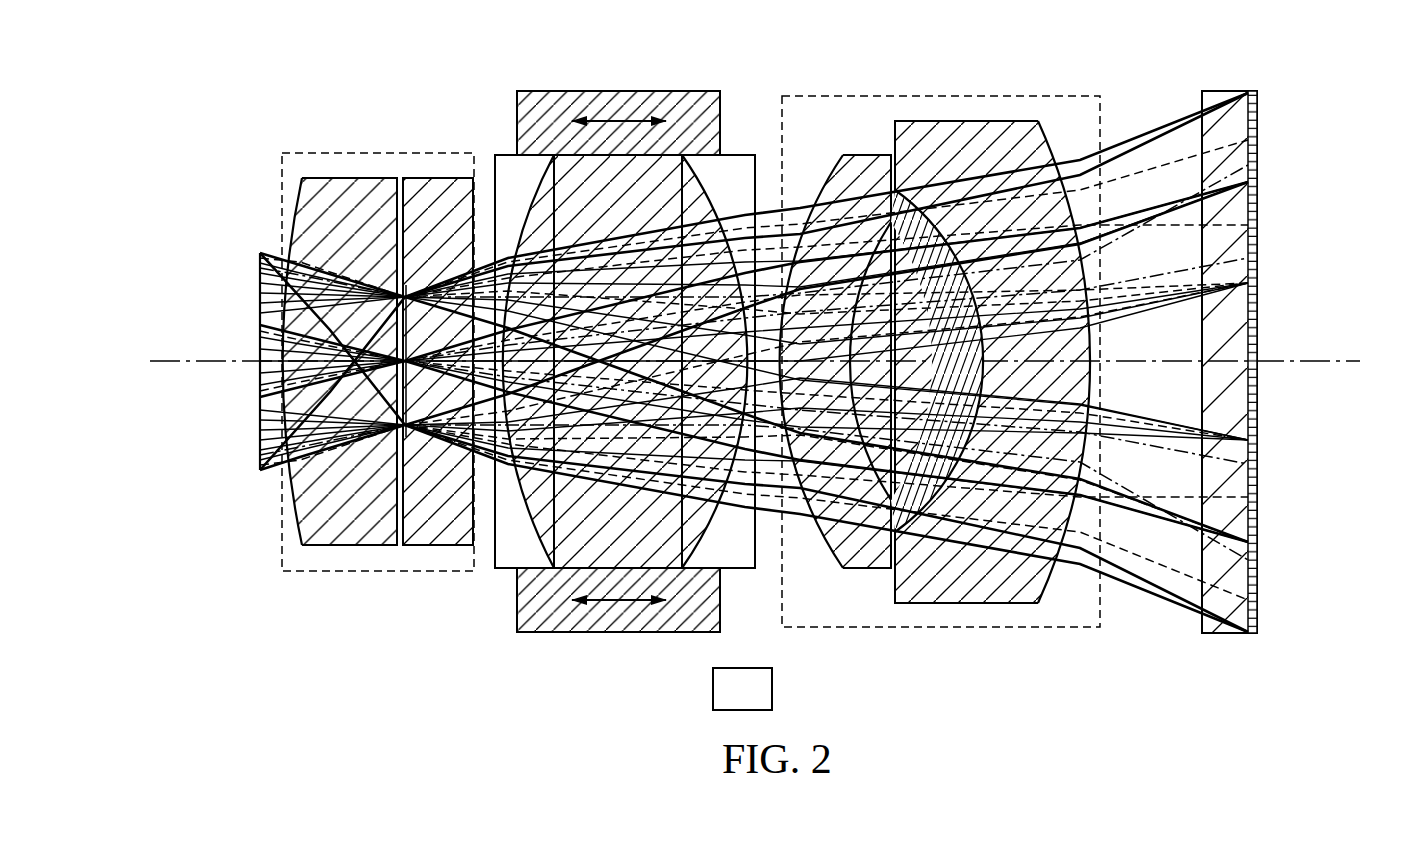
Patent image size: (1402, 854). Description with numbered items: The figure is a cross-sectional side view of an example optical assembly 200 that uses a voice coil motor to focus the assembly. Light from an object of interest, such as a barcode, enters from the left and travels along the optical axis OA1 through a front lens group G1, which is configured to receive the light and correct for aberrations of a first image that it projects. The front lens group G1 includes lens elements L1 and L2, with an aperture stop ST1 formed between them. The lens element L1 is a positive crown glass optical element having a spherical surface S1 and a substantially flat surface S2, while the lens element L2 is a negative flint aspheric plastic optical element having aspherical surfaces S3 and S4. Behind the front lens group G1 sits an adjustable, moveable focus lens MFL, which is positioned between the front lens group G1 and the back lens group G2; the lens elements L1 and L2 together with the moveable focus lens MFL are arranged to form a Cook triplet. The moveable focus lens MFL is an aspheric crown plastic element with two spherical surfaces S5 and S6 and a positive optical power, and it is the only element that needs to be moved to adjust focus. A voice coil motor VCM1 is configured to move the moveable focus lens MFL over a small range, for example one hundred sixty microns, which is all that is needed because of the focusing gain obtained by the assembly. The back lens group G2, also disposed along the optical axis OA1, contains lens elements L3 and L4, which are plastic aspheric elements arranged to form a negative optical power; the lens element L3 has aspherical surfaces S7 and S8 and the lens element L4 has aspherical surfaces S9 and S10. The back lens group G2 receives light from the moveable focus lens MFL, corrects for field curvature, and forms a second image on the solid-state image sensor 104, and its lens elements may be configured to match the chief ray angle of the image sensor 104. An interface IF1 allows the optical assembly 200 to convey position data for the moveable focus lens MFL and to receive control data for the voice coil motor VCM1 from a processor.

The optical assembly 200 is at (184, 60).
The image sensor 104 is at (1250, 91).
The optical axis OA1 is at (218, 360).
The front lens group G1 is at (375, 153).
The back lens group G2 is at (938, 96).
The lens element L1 is at (334, 403).
The lens element L2 is at (356, 364).
The lens element L3 is at (840, 362).
The lens element L4 is at (1035, 402).
The moveable focus lens MFL is at (608, 365).
The voice coil motor VCM1 is at (618, 91).
The aperture stop ST1 is at (406, 425).
The interface IF1 is at (742, 689).
The spherical surface S1 is at (289, 224).
The substantially flat surface S2 is at (397, 526).
The aspherical surface S3 is at (417, 326).
The aspherical surface S4 is at (470, 517).
The spherical surface S5 is at (530, 183).
The spherical surface S6 is at (708, 178).
The aspherical surface S7 is at (824, 170).
The aspherical surface S8 is at (1036, 604).
The aspherical surface S9 is at (922, 500).
The aspherical surface S10 is at (1091, 390).